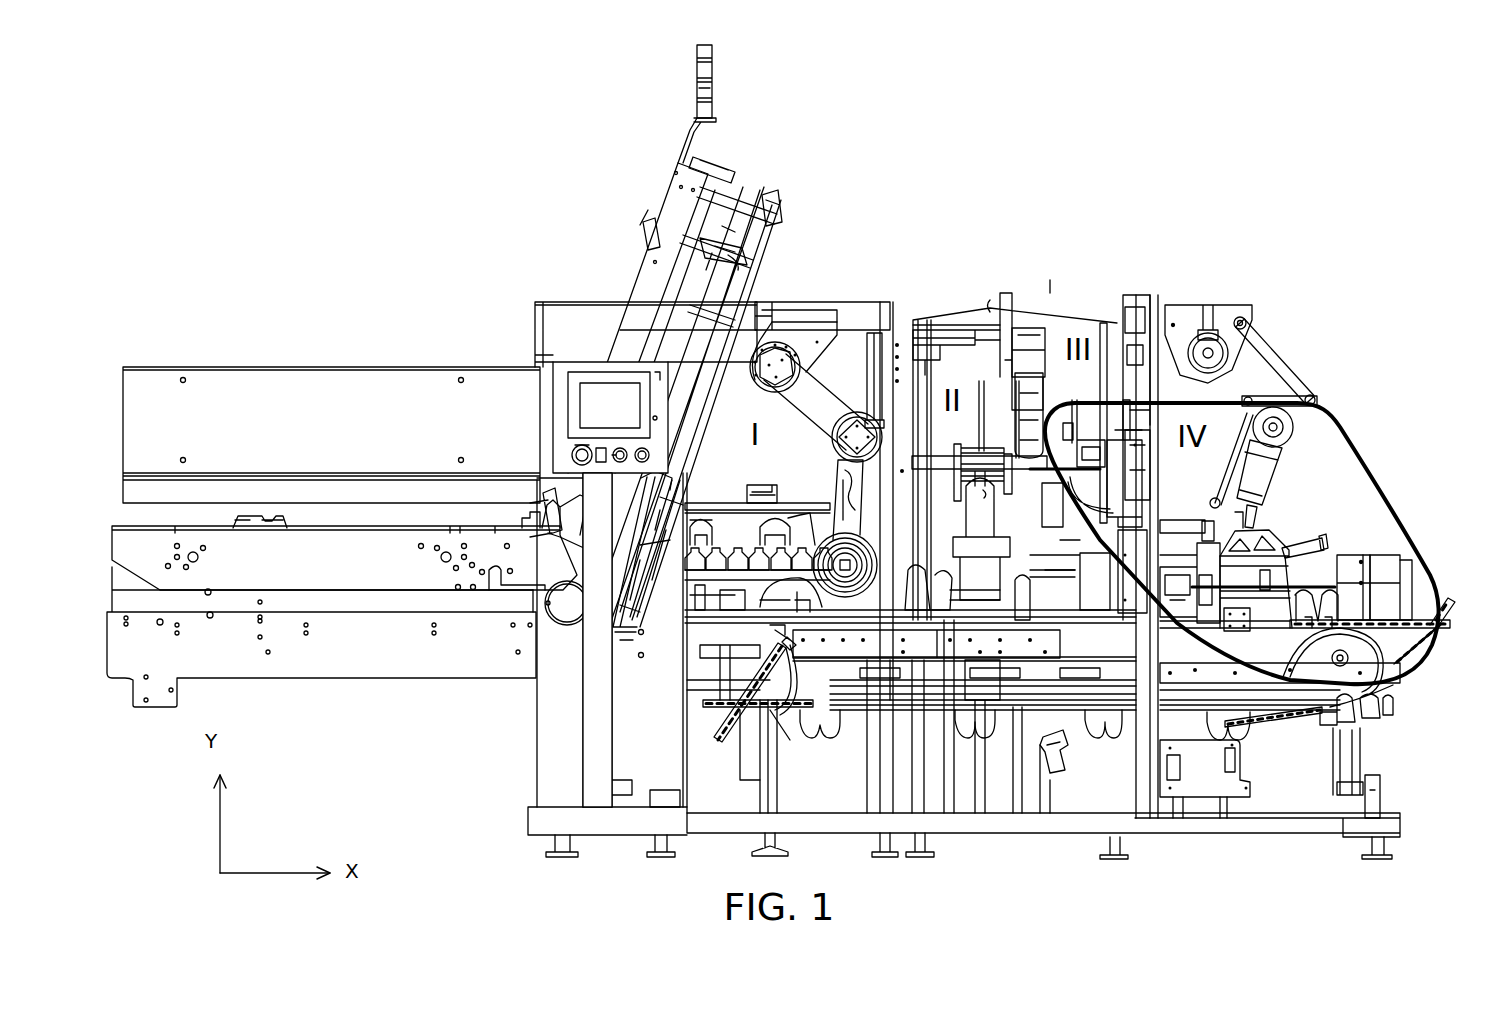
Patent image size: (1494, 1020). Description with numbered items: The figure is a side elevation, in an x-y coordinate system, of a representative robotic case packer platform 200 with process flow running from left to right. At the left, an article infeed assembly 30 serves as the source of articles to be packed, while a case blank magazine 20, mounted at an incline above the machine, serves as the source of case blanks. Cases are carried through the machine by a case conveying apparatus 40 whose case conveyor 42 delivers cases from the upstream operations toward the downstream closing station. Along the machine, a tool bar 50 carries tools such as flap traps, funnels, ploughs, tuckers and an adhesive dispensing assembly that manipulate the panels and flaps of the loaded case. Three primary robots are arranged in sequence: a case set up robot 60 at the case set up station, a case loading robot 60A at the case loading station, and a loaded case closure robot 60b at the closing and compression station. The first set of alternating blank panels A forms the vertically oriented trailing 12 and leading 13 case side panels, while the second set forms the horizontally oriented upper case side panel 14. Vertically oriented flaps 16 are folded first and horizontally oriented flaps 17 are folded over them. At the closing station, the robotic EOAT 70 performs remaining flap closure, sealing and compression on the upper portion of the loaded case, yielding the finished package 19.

The robotic case packer platform 200 is at (1177, 188).
The case blank magazine 20 is at (800, 211).
The article infeed assembly 30 is at (497, 340).
The case set up robot 60 is at (847, 378).
The case loading robot 60A is at (1043, 390).
The loaded case closure robot 60b is at (1316, 356).
The first set of alternating blank panels A is at (1340, 425).
The robotic EOAT 70 is at (1280, 530).
The trailing case side panel 12 is at (1338, 572).
The leading case side panel 13 is at (1400, 605).
The upper case side panel 14 is at (1363, 555).
The vertically oriented flaps 16 is at (1355, 588).
The horizontally oriented flaps 17 is at (1388, 603).
The package 19 is at (1411, 557).
The case conveying apparatus 40 is at (750, 733).
The case conveyor 42 is at (783, 705).
The tool bar 50 is at (786, 648).